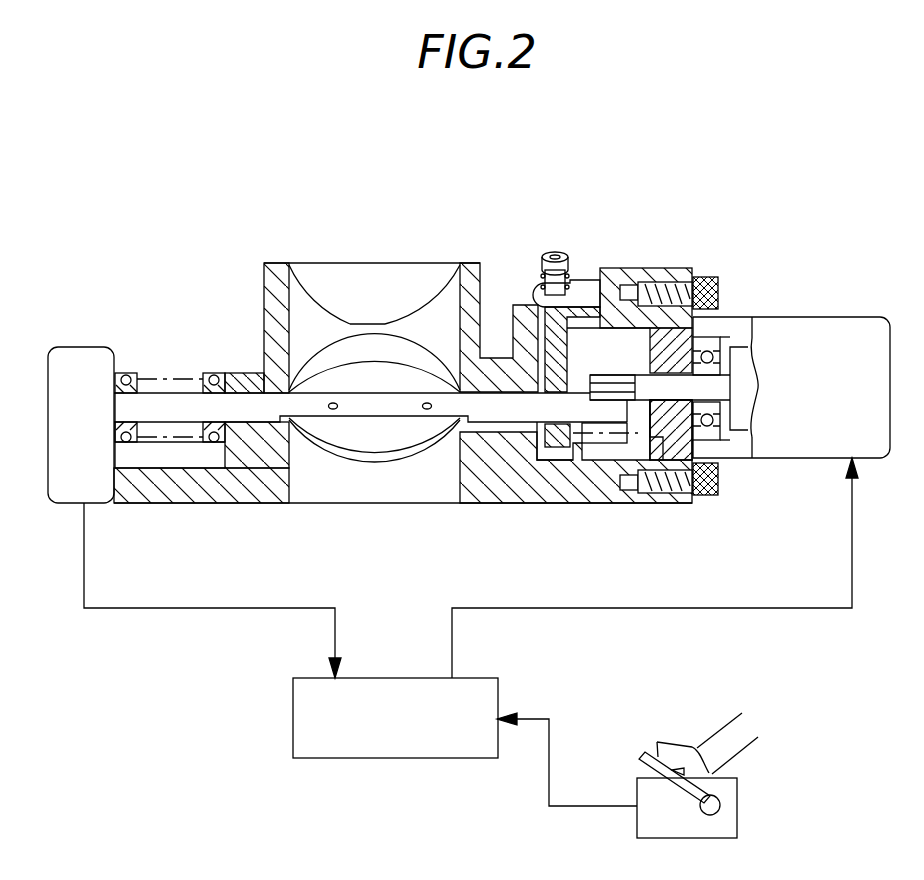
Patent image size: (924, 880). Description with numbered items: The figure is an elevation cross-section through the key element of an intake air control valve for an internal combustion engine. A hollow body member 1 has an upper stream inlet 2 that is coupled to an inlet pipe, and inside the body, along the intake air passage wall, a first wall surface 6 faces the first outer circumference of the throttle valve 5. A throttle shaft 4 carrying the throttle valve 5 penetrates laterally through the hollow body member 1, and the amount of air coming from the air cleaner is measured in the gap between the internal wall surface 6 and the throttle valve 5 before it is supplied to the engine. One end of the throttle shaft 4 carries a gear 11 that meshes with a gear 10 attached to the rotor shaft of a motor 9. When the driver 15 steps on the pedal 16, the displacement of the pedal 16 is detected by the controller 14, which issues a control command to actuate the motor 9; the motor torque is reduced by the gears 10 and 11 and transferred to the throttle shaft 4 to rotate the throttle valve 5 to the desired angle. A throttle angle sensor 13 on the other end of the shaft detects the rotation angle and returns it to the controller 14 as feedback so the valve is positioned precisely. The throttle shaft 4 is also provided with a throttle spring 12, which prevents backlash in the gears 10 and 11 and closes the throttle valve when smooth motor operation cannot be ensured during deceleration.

The hollow body member 1 is at (480, 283).
The upper stream inlet 2 is at (428, 262).
The throttle shaft 4 is at (233, 383).
The throttle valve 5 is at (345, 380).
The first wall surface 6 is at (385, 345).
The motor 9 is at (805, 330).
The gear 10 is at (610, 375).
The gear 11 is at (605, 443).
The throttle spring 12 is at (172, 378).
The throttle position sensor 13 is at (83, 347).
The controller 14 is at (293, 706).
The driver 15 is at (723, 727).
The pedal 16 is at (640, 757).